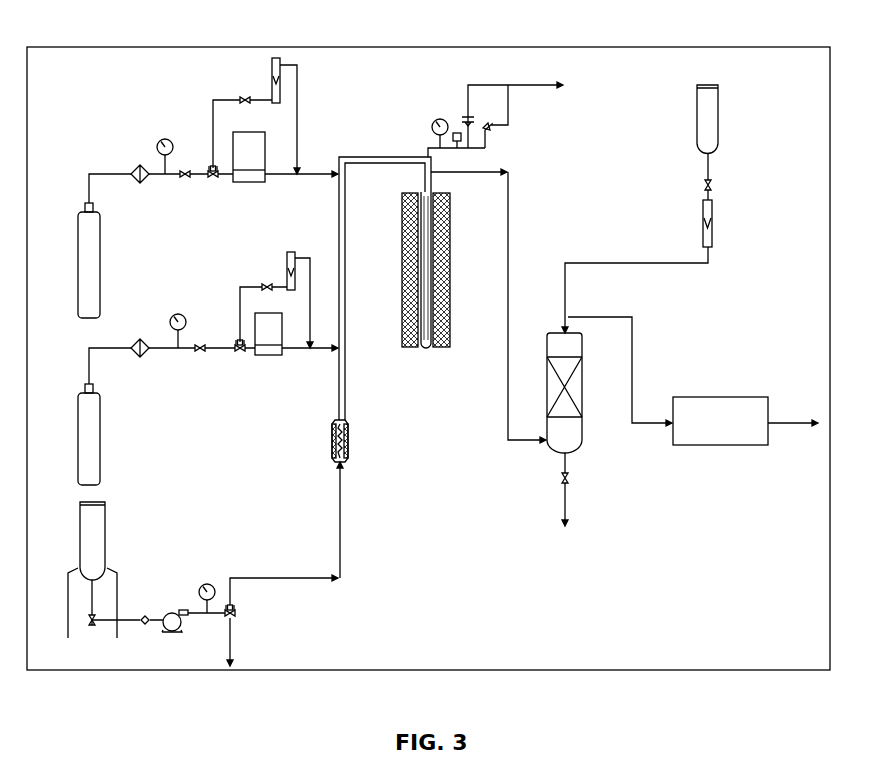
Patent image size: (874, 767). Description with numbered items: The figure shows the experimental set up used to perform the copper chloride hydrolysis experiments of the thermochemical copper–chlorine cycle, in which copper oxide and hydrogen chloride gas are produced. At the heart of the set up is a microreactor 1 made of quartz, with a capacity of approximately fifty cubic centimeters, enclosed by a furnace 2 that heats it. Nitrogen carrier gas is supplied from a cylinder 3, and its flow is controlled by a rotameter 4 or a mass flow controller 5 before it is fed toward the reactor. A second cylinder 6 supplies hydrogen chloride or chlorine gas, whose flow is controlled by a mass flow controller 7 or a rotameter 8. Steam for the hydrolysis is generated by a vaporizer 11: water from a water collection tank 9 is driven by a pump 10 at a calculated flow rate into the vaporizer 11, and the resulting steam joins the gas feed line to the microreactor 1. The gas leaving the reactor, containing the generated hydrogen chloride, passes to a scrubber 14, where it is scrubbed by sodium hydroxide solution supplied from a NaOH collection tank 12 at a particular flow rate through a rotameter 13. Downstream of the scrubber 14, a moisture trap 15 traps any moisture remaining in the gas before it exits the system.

The microreactor 1 is at (427, 286).
The furnace 2 is at (433, 270).
The cylinder for nitrogen 3 is at (89, 260).
The rotameter 4 is at (267, 80).
The mass flow controller 5 is at (249, 157).
The cylinder for hydrogen chloride or chlorine 6 is at (89, 434).
The mass flow controller 7 is at (268, 334).
The rotameter 8 is at (284, 271).
The water collection tank 9 is at (92, 570).
The pump 10 is at (174, 639).
The vaporizer 11 is at (327, 441).
The NaOH collection tank 12 is at (693, 119).
The rotameter 13 is at (693, 223).
The scrubber 14 is at (564, 393).
The moisture trap 15 is at (720, 421).